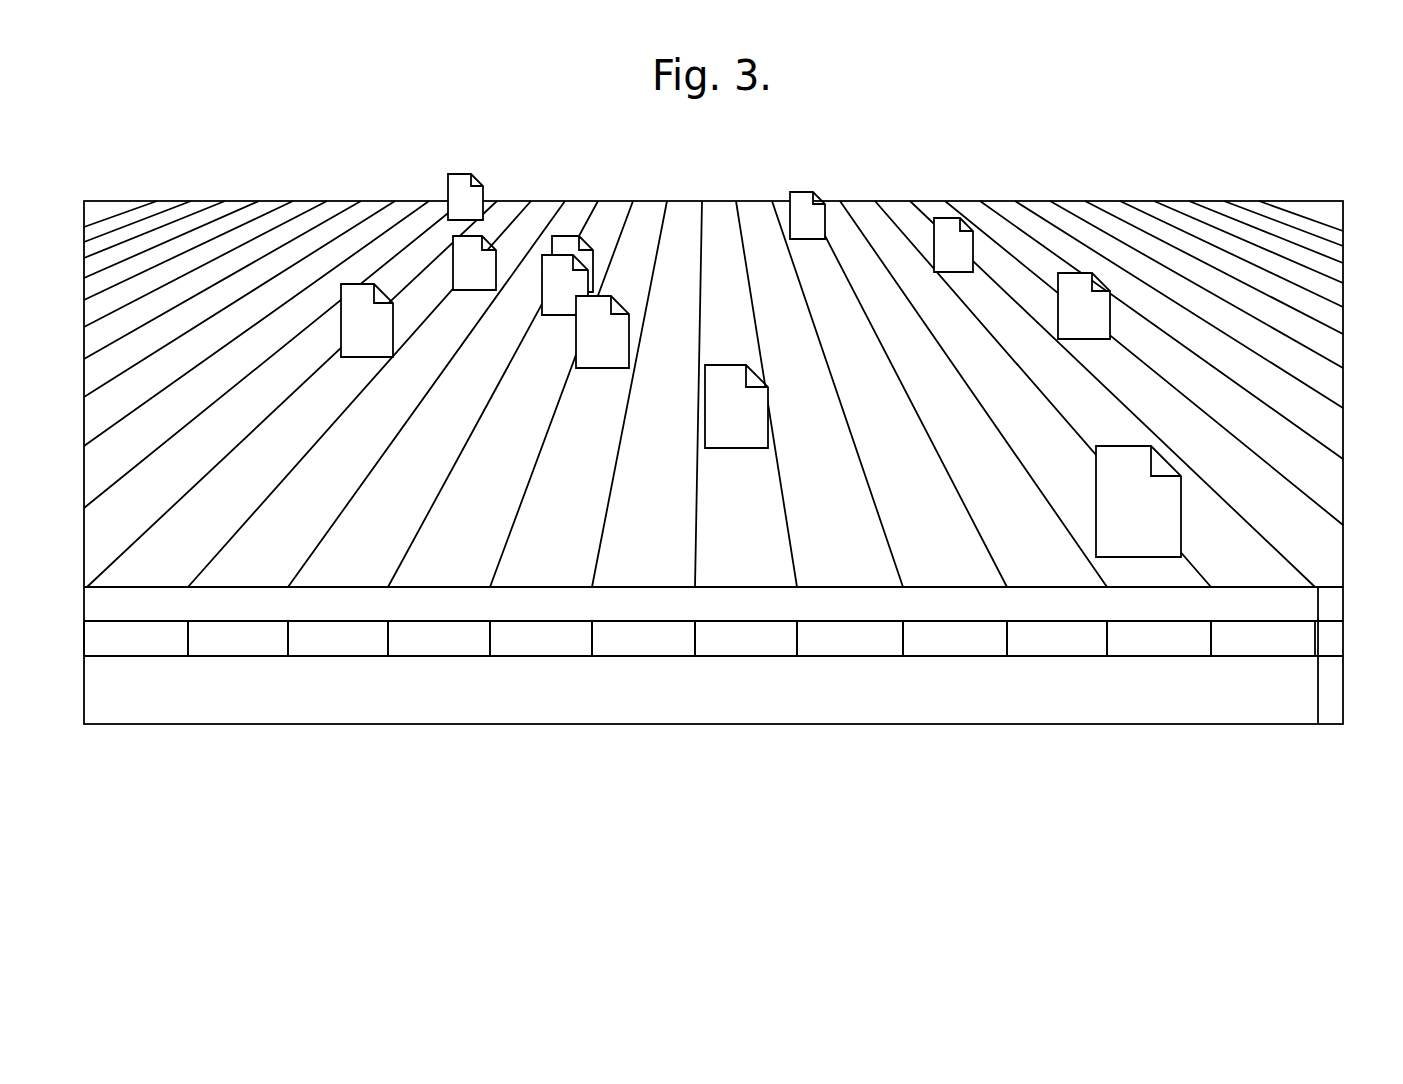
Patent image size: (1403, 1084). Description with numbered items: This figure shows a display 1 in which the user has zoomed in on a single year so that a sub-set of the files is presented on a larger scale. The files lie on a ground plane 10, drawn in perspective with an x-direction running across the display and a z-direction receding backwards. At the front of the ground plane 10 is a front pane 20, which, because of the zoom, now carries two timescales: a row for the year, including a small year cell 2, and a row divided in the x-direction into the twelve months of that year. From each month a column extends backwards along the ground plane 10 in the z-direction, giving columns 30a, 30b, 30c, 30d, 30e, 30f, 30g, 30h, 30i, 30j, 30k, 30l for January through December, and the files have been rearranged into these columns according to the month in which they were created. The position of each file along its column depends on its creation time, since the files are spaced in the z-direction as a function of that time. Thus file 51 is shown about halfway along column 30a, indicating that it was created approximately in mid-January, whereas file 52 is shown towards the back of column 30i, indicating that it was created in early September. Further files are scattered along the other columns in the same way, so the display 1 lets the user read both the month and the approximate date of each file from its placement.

The user interface display 1 is at (942, 132).
The year column 2 is at (1327, 655).
The ground plane 10 is at (222, 230).
The front pane 20 is at (737, 655).
The column 30a is at (88, 660).
The column 30b is at (192, 660).
The column 30c is at (292, 660).
The column 30d is at (392, 660).
The column 30e is at (494, 660).
The column 30f is at (596, 660).
The column 30g is at (699, 660).
The column 30h is at (801, 660).
The column 30i is at (907, 660).
The column 30j is at (1011, 660).
The column 30k is at (1111, 660).
The column 30l is at (1263, 667).
The file 51 is at (378, 328).
The file 52 is at (802, 207).